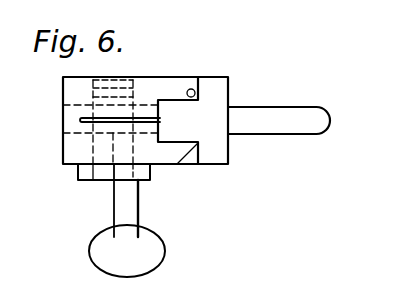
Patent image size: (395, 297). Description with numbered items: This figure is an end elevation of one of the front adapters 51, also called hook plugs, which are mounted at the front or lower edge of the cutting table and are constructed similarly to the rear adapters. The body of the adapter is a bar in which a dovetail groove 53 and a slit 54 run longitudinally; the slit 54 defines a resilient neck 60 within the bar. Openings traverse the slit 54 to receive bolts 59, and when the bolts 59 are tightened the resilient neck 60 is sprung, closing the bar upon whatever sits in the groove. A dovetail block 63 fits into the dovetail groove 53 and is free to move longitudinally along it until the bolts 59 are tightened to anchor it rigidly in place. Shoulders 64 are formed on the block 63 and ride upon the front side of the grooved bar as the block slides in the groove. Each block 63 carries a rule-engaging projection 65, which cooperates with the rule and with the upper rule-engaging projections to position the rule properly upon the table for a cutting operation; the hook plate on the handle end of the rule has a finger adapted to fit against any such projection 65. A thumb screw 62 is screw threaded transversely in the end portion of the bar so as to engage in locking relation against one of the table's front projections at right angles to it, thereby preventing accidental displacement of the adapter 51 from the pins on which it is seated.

The front adapter 51 is at (60, 157).
The dovetail groove 53 is at (180, 143).
The slit 54 is at (110, 120).
The bolt 59 is at (85, 176).
The resilient neck 60 is at (78, 120).
The thumb screw 62 is at (145, 270).
The dovetail block 63 is at (177, 112).
The shoulder 64 is at (197, 91).
The rule-engaging projection 65 is at (298, 113).